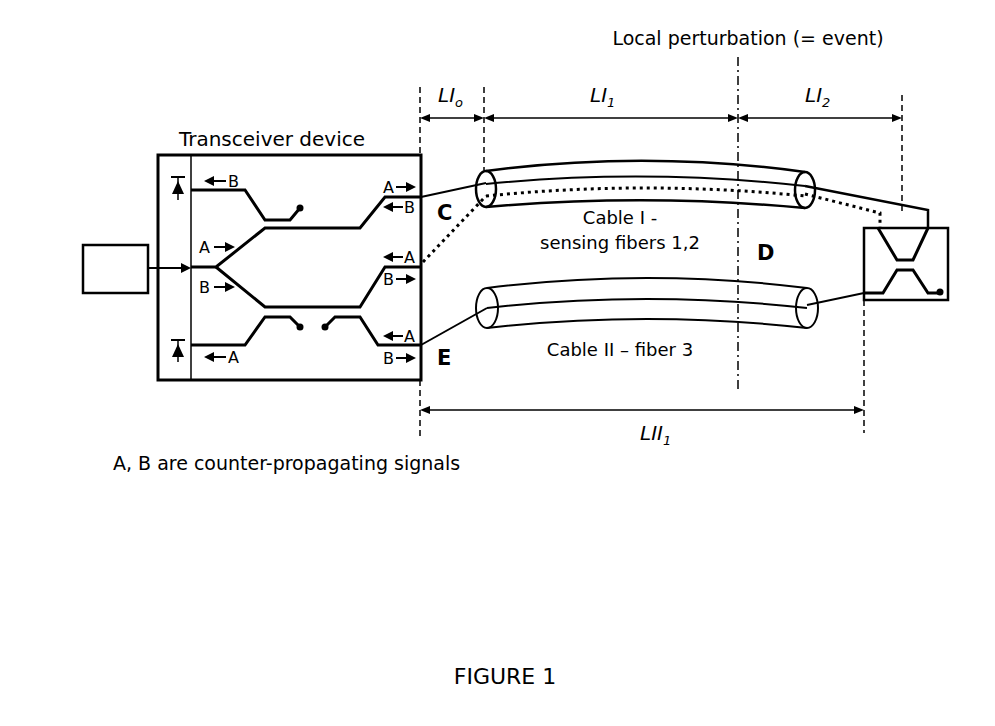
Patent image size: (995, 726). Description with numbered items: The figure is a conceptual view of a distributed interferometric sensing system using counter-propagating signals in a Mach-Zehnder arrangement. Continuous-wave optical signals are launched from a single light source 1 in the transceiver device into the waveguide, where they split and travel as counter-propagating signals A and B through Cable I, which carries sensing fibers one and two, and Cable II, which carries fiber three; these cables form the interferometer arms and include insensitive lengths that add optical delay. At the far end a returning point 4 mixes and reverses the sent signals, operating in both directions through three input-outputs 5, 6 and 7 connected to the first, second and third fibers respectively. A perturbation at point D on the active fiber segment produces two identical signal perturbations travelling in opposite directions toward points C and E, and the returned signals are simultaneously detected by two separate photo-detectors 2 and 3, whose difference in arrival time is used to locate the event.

The light source 1 is at (137, 257).
The photo-detector 2 is at (159, 186).
The photo-detector 3 is at (160, 349).
The returning point 4 is at (906, 281).
The input-output 5 is at (869, 204).
The input-output 6 is at (842, 215).
The input-output 7 is at (835, 309).